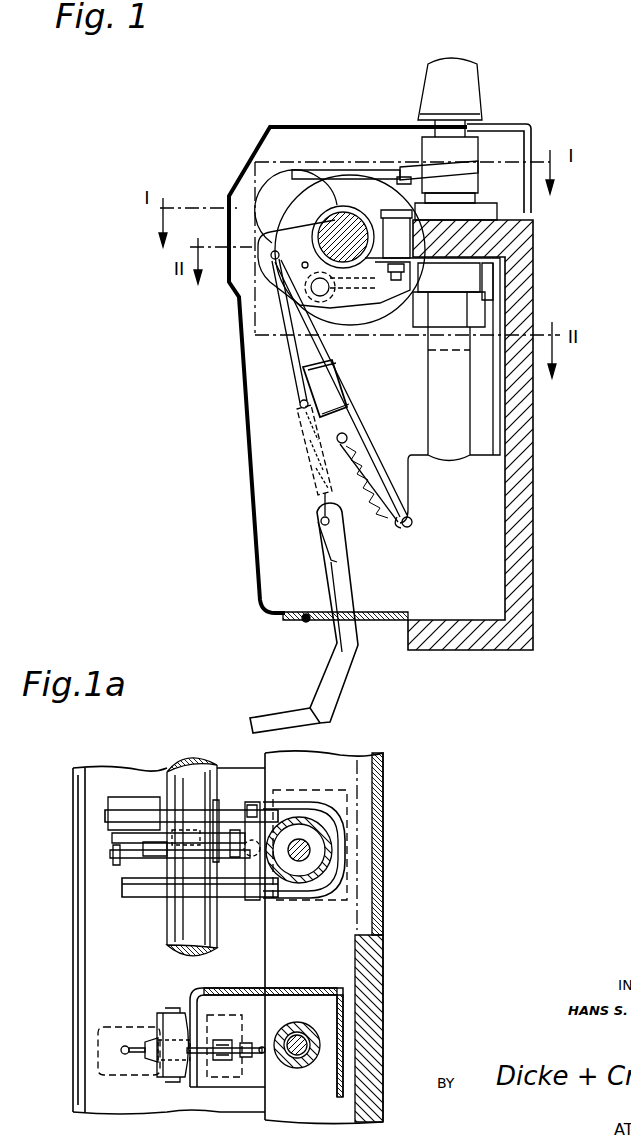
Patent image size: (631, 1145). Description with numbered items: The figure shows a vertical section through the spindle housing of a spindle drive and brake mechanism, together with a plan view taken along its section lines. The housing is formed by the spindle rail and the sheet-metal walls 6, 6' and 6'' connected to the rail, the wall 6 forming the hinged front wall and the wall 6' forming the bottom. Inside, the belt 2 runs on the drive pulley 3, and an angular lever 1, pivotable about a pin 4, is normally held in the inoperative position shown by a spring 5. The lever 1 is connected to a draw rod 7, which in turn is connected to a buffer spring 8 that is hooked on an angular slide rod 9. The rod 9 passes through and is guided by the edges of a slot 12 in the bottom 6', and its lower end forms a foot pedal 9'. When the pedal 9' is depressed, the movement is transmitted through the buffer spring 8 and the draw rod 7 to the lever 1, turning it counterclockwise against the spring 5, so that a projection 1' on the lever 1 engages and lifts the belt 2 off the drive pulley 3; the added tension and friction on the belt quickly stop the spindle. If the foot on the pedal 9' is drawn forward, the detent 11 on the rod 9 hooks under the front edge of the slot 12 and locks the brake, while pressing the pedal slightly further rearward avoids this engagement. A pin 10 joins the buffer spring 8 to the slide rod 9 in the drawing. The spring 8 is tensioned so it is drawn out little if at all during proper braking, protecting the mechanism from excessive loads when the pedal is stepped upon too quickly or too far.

In FIG. 1, the angular lever 1 is at (350, 200).
In FIG. 1A, the angular lever 1 is at (167, 851).
In FIG. 1, the projection 1' is at (389, 128).
In FIG. 1A, the projection 1' is at (267, 789).
In FIG. 1, the belt 2 is at (412, 175).
In FIG. 1A, the belt 2 is at (143, 810).
In FIG. 1, the drive pulley 3 is at (300, 198).
In FIG. 1A, the drive pulley 3 is at (140, 894).
In FIG. 1, the pin 4 is at (318, 288).
In FIG. 1A, the pin 4 is at (175, 833).
In FIG. 1, the spring 5 is at (350, 290).
In FIG. 1A, the spring 5 is at (193, 855).
In FIG. 1, the sheet-metal wall 6 is at (345, 388).
In FIG. 1, the bottom wall 6' is at (345, 636).
In FIG. 1A, the bottom wall 6' is at (266, 1051).
In FIG. 1, the sheet-metal wall 6'' is at (532, 156).
In FIG. 1A, the sheet-metal wall 6'' is at (385, 937).
In FIG. 1, the draw rod 7 is at (303, 401).
In FIG. 1A, the draw rod 7 is at (136, 1047).
In FIG. 1, the buffer spring 8 is at (308, 455).
In FIG. 1A, the buffer spring 8 is at (150, 1058).
In FIG. 1, the angular slide rod 9 is at (304, 629).
In FIG. 1A, the angular slide rod 9 is at (226, 1043).
In FIG. 1, the foot pedal 9' is at (286, 731).
In FIG. 1A, the foot pedal 9' is at (101, 1044).
In FIG. 1, the pin 10 is at (322, 521).
In FIG. 1, the detent 11 is at (325, 561).
In FIG. 1, the slot 12 is at (330, 622).
In FIG. 1A, the slot 12 is at (213, 1060).